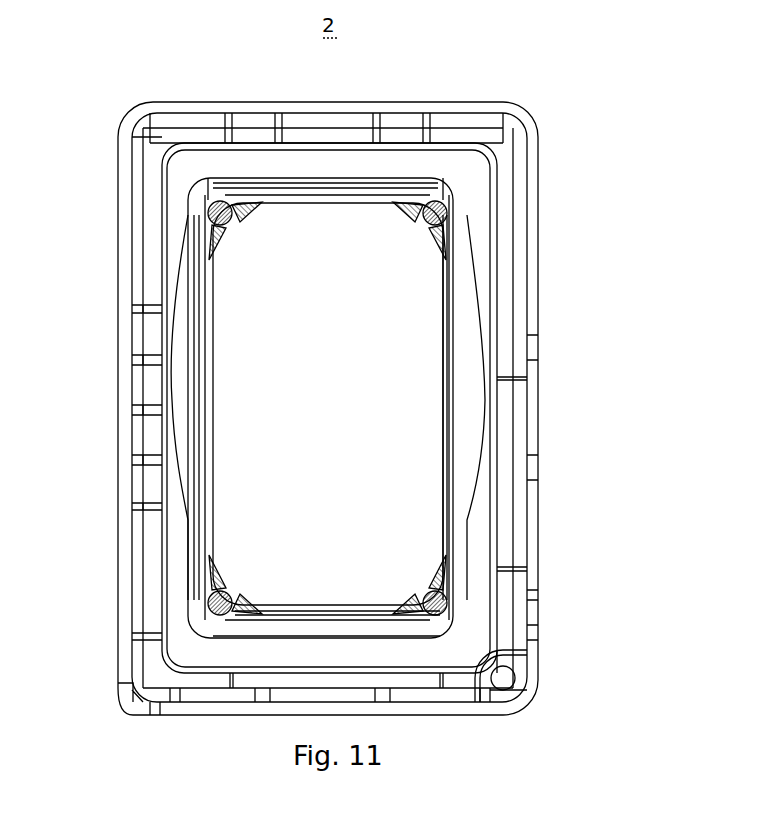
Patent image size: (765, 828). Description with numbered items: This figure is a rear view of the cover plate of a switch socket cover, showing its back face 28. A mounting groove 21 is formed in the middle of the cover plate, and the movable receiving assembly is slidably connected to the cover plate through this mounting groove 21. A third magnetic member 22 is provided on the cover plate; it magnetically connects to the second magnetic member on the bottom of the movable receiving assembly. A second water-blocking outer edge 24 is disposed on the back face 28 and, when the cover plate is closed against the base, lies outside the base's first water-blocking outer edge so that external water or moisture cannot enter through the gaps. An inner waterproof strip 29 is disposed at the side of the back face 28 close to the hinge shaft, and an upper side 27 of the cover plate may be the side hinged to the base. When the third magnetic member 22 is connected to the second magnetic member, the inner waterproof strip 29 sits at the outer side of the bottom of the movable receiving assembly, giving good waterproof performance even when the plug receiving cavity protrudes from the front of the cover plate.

The mounting groove 21 is at (225, 325).
The third magnetic member 22 is at (215, 210).
The second water-blocking outer edge 24 is at (495, 270).
The upper side 27 is at (360, 135).
The back face 28 is at (172, 478).
The inner waterproof strip 29 is at (205, 183).